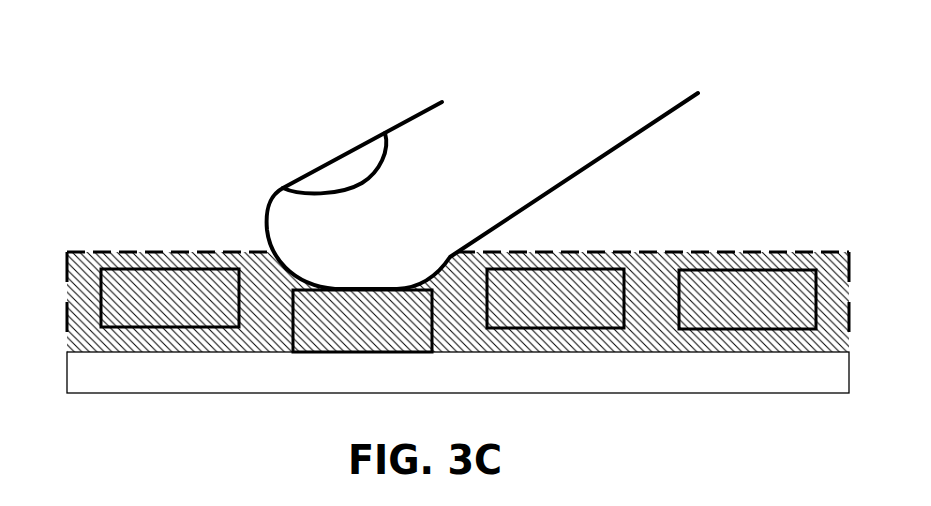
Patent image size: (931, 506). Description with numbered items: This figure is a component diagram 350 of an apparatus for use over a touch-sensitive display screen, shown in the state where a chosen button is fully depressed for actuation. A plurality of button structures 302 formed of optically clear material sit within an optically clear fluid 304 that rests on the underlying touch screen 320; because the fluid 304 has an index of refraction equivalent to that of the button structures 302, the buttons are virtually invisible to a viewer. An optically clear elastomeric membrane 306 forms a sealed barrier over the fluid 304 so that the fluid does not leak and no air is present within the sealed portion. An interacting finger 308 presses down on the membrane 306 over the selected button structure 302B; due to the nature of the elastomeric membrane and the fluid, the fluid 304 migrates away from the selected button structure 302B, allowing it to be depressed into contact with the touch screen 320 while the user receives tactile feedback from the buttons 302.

The component diagram 350 is at (121, 72).
The touch screen 320 is at (458, 372).
The optically clear fluid 304 is at (272, 322).
The elastomeric membrane 306 is at (653, 252).
The button structures 302 is at (458, 299).
The selected button structure 302B is at (362, 321).
The interacting finger 308 is at (315, 165).